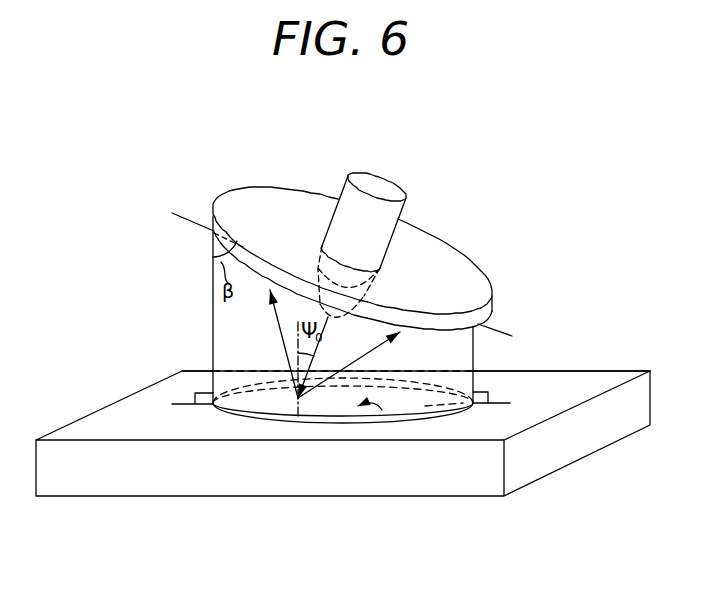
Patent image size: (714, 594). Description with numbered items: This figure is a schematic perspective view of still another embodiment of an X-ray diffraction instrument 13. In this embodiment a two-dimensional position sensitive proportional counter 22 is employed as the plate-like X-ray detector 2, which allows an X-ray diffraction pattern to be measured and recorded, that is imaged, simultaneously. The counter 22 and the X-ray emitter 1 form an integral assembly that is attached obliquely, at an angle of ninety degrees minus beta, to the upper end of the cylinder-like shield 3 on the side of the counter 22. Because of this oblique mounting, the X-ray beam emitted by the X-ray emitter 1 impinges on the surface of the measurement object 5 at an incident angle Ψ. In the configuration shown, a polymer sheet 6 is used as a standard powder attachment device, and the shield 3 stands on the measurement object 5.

The X-ray emitter 1 is at (378, 182).
The plate-like X-ray detector 2 is at (447, 257).
The two-dimensional position sensitive proportional counter 22 is at (478, 310).
The cylinder-like shield 3 is at (212, 330).
The measurement object 5 is at (192, 486).
The polymer sheet 6 is at (382, 410).
The X-ray diffraction instrument 13 is at (352, 268).